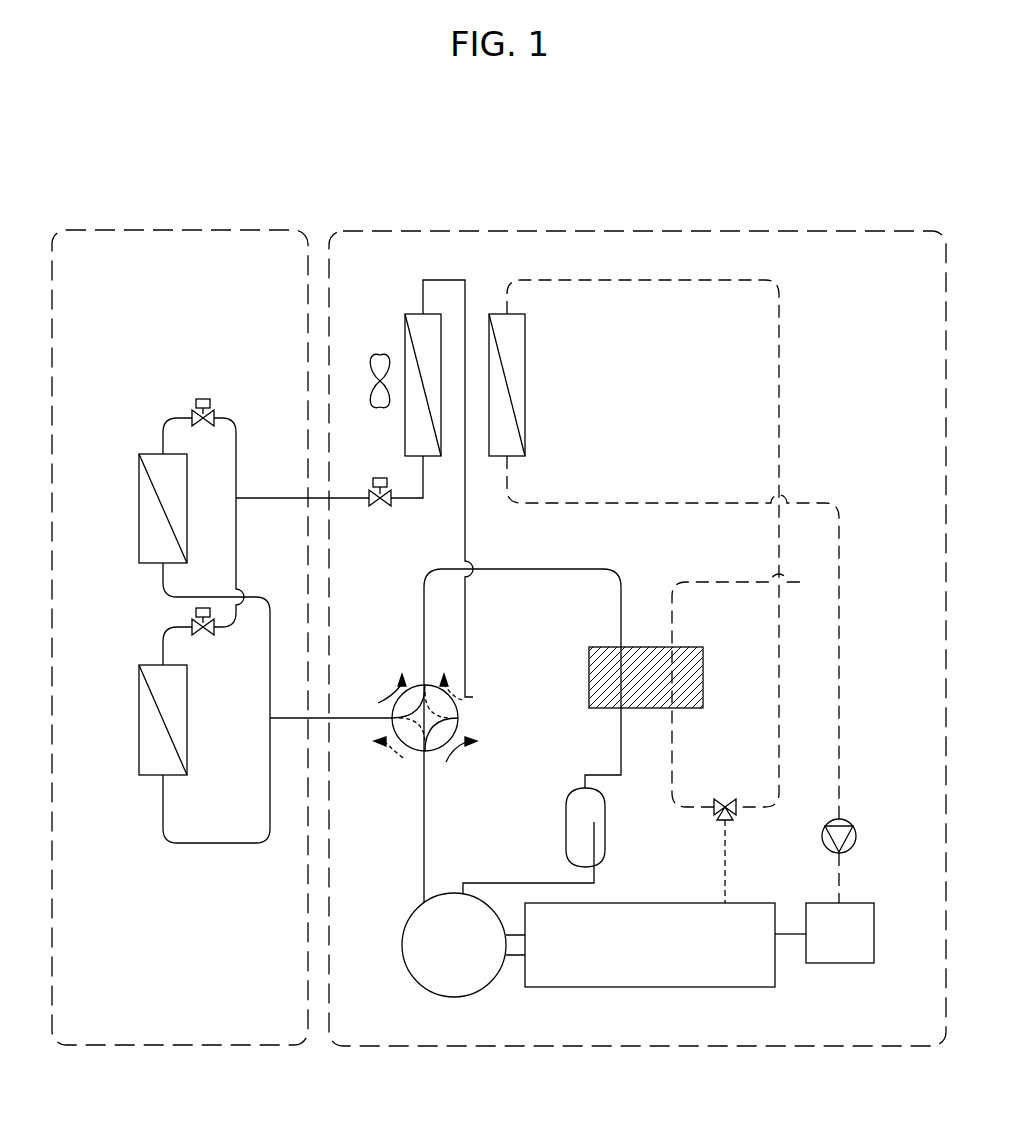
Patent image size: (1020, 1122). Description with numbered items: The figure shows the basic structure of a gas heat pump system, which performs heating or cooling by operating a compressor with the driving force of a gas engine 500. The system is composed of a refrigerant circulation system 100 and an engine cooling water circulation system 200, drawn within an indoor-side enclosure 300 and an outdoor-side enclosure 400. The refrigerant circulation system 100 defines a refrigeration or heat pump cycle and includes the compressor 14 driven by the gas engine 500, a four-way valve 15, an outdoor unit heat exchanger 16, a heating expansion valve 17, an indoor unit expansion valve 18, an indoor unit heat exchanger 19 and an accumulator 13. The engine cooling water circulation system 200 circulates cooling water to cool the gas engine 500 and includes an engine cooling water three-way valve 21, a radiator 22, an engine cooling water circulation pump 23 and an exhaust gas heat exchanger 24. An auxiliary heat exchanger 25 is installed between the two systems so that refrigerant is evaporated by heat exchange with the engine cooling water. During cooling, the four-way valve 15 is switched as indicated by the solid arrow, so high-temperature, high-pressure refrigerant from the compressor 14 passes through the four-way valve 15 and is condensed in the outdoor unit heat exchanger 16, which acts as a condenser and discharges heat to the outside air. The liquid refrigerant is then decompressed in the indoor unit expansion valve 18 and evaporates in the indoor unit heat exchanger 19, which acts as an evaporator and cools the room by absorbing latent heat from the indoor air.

The indoor unit 300 is at (180, 230).
The outdoor unit 400 is at (636, 231).
The refrigerant circulation system 100 is at (424, 829).
The engine cooling water circulation system 200 is at (839, 678).
The accumulator 13 is at (566, 830).
The compressor 14 is at (402, 946).
The four-way valve 15 is at (400, 700).
The outdoor unit heat exchanger 16 is at (415, 314).
The heating expansion valve 17 is at (382, 506).
The indoor unit expansion valve 18 is at (203, 398).
The indoor unit heat exchanger 19 is at (150, 454).
The engine cooling water three-way valve 21 is at (730, 799).
The radiator 22 is at (525, 384).
The engine cooling water circulation pump 23 is at (856, 836).
The exhaust gas heat exchanger 24 is at (874, 934).
The auxiliary heat exchanger 25 is at (600, 647).
The gas engine 500 is at (650, 903).